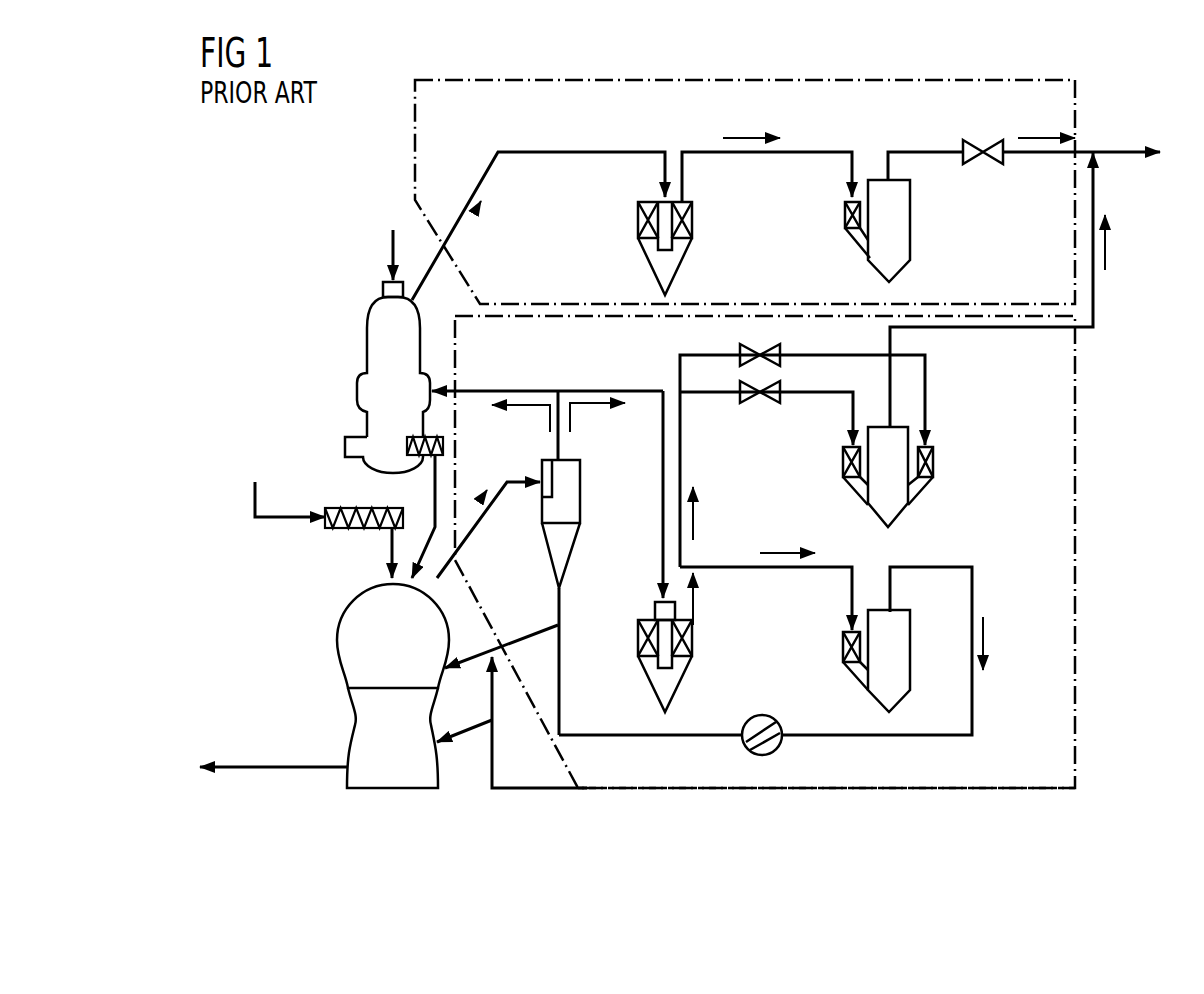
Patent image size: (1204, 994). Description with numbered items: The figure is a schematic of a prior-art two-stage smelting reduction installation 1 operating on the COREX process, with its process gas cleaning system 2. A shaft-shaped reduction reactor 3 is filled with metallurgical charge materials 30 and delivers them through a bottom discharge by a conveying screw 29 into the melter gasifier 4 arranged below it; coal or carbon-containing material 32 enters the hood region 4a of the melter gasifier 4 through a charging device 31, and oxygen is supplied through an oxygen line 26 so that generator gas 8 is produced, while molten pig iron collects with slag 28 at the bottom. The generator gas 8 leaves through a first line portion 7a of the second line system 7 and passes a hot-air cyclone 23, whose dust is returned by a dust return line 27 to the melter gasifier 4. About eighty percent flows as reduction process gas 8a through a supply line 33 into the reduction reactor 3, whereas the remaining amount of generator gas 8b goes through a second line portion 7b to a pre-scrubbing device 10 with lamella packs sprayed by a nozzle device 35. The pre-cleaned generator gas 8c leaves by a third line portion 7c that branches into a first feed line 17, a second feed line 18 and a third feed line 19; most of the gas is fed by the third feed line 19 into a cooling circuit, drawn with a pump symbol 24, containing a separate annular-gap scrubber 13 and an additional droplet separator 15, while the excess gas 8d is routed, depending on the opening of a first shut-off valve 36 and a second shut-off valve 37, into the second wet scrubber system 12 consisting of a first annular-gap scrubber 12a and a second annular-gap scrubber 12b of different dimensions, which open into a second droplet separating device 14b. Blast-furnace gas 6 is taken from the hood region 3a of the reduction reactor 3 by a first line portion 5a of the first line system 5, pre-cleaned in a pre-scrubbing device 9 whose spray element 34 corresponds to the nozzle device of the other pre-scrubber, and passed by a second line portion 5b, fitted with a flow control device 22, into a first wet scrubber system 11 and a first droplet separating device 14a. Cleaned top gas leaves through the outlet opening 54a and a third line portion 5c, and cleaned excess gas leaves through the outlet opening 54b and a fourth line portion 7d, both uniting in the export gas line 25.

The smelting reduction installation 1 is at (332, 250).
The process gas cleaning system 2 is at (1128, 455).
The reduction reactor 3 is at (365, 347).
The hood region 3a is at (410, 300).
The melter gasifier 4 is at (340, 628).
The hood region 4a is at (382, 585).
The first line system 5 is at (518, 78).
The first line portion 5a is at (482, 182).
The second line portion 5b is at (798, 152).
The third line portion 5c is at (915, 152).
The blast-furnace gas 6 is at (470, 222).
The second line system 7 is at (778, 790).
The first line portion 7a is at (478, 522).
The second line portion 7b is at (592, 390).
The third line portion 7c is at (661, 580).
The fourth line portion 7d is at (1015, 329).
The generator gas 8 is at (464, 512).
The reduction process gas 8a is at (526, 408).
The amount of generator gas 8b is at (598, 406).
The pre-cooled and pre-cleaned generator gas 8c is at (693, 605).
The excess gas 8d is at (693, 523).
The pre-scrubbing device 9 is at (650, 258).
The pre-scrubbing device 10 is at (650, 678).
The first wet scrubber system 11 is at (830, 215).
The second wet scrubber system 12 is at (901, 460).
The first annular-gap scrubber 12a is at (840, 467).
The second annular-gap scrubber 12b is at (937, 465).
The annular-gap scrubber 13 is at (838, 648).
The first droplet separating device 14a is at (903, 222).
The second droplet separating device 14b is at (895, 520).
The additional droplet separator 15 is at (905, 655).
The first feed line 17 is at (713, 395).
The second feed line 18 is at (700, 350).
The third feed line 19 is at (752, 575).
The flow control device 22 is at (988, 142).
The hot-air cyclone 23 is at (580, 512).
The pump 24 is at (762, 713).
The export gas line 25 is at (1118, 150).
The oxygen line 26 is at (523, 787).
The dust return line 27 is at (525, 638).
The slag 28 is at (285, 765).
The conveying screw 29 is at (407, 443).
The metallurgical charge materials 30 is at (433, 490).
The charging device 31 is at (342, 509).
The carbon-containing material 32 is at (253, 500).
The supply line 33 is at (515, 389).
The filter element 34 is at (680, 238).
The nozzle device 35 is at (680, 655).
The first shut-off valve 36 is at (752, 396).
The second shut-off valve 37 is at (772, 347).
The outlet opening 54a is at (890, 180).
The outlet opening 54b is at (890, 426).